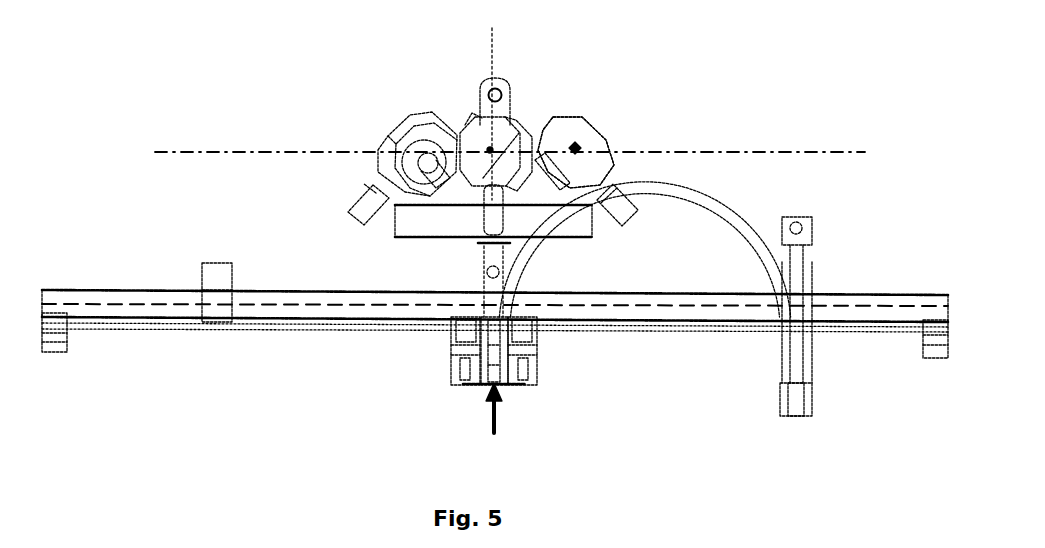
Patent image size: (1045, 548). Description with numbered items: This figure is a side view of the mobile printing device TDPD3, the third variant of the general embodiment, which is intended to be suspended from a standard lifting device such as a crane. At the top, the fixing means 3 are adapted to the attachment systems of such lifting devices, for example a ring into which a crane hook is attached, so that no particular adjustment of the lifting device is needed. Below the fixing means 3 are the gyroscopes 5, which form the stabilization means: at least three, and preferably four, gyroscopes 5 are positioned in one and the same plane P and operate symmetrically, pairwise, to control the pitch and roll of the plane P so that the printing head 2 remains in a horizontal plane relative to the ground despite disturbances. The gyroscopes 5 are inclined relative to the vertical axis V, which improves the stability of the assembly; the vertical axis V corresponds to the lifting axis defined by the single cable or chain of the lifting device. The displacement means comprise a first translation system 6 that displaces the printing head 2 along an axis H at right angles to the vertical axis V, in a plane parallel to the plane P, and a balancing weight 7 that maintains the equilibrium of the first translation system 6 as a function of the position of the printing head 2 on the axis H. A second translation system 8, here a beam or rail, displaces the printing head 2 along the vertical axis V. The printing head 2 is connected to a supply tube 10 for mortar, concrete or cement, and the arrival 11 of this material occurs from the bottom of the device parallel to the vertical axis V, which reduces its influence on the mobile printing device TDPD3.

The printing head 2 is at (805, 400).
The fixing means 3 is at (509, 84).
The gyroscopes 5 is at (594, 148).
The first translation system 6 is at (345, 317).
The balancing weight 7 is at (205, 272).
The second translation system 8 is at (800, 263).
The supply tube 10 is at (677, 187).
The arrival of material 11 is at (494, 391).
The mobile printing device TDPD3 is at (197, 104).
The plane P is at (153, 152).
The vertical axis V is at (488, 52).
The axis H is at (612, 305).